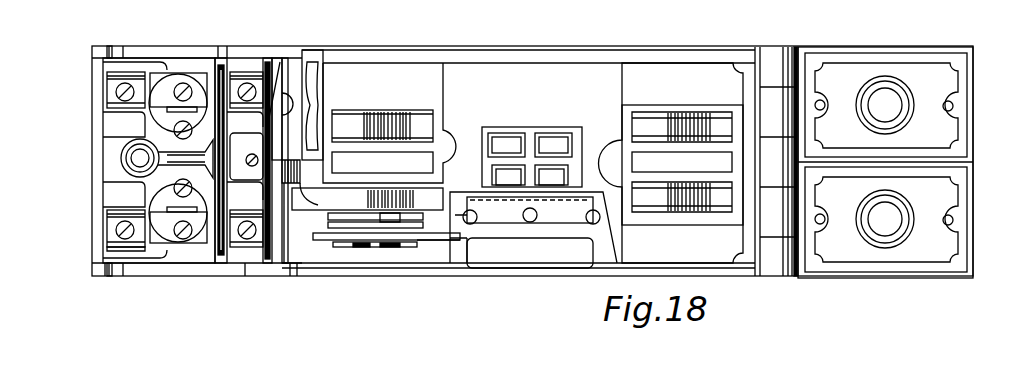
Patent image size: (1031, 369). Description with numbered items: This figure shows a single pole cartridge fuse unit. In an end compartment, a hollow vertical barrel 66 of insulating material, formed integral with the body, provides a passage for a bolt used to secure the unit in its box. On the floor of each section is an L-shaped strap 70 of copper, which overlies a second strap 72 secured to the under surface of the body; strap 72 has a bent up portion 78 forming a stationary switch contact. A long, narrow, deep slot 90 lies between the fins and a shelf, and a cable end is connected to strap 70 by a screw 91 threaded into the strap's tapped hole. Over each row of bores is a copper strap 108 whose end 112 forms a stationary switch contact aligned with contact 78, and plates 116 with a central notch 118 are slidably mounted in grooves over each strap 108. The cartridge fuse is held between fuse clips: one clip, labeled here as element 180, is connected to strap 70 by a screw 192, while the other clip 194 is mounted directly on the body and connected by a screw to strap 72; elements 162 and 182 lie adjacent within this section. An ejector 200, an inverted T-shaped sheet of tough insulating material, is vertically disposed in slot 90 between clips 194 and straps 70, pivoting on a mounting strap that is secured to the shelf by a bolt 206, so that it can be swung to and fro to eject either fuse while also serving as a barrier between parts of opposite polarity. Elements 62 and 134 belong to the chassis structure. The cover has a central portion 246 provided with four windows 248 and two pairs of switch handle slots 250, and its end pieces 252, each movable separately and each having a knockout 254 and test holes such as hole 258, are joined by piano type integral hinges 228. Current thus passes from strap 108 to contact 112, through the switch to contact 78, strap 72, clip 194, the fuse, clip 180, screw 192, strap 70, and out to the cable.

The partition strip 62 is at (275, 258).
The hollow vertical barrel 66 is at (121, 158).
The L-shaped strap 70 is at (172, 192).
The second strap 72 is at (313, 236).
The bent up portion 78 is at (330, 234).
The slot 90 is at (222, 258).
The screw 91 is at (191, 191).
The copper strap 108 is at (530, 222).
The stationary switch contact end 112 is at (437, 241).
The plate 116 is at (581, 214).
The central notch 118 is at (519, 215).
The contact 134 is at (378, 247).
The coil 162 is at (367, 199).
The terminal plate 180 is at (140, 248).
The coil 182 is at (710, 122).
The screw 192 is at (108, 228).
The fuse clip 194 is at (252, 248).
The ejector 200 is at (221, 60).
The bolt 206 is at (252, 155).
The piano type integral hinge 228 is at (797, 46).
The central portion 246 is at (671, 163).
The window 248 is at (552, 136).
The switch handle slot 250 is at (640, 122).
The end piece 252 is at (886, 162).
The knockout 254 is at (885, 162).
The hole 258 is at (954, 106).